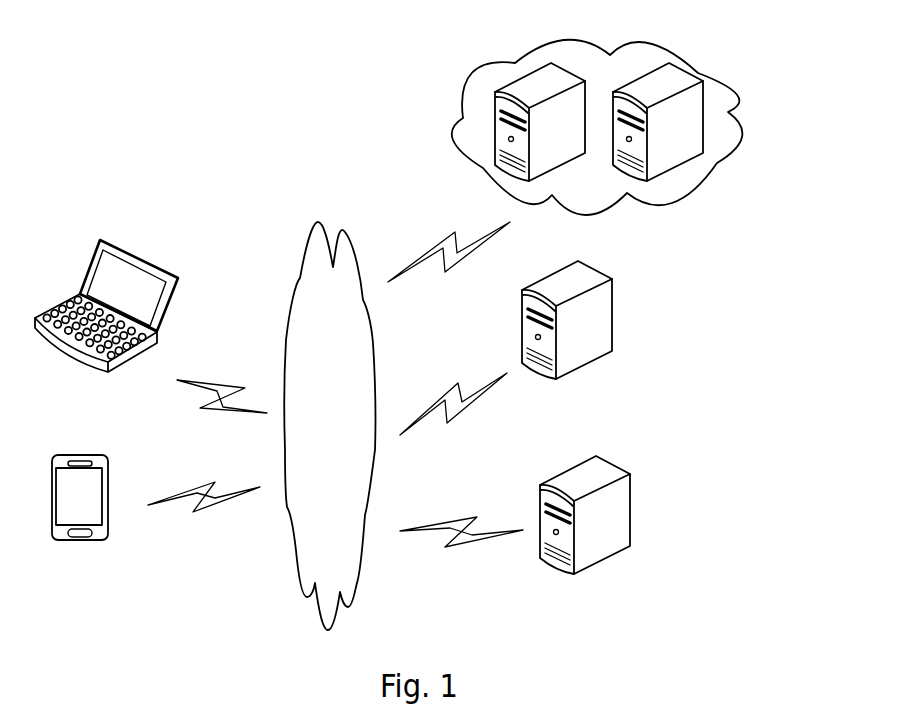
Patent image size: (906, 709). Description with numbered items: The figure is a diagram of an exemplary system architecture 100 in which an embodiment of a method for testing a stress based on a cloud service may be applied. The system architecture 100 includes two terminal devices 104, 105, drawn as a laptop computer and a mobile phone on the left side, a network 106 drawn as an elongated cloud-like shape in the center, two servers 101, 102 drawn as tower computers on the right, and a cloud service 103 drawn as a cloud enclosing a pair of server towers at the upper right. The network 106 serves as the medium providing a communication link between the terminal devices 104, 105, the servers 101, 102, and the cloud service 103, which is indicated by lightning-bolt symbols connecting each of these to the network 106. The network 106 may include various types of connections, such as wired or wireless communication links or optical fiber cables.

The system architecture 100 is at (787, 43).
The server 101 is at (567, 337).
The server 102 is at (585, 527).
The cloud service 103 is at (597, 141).
The terminal device 104 is at (106, 319).
The terminal device 105 is at (80, 515).
The network 106 is at (329, 426).